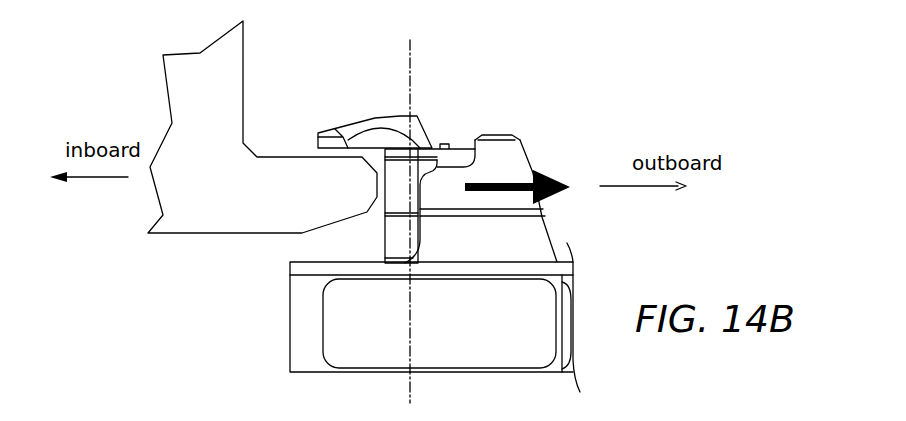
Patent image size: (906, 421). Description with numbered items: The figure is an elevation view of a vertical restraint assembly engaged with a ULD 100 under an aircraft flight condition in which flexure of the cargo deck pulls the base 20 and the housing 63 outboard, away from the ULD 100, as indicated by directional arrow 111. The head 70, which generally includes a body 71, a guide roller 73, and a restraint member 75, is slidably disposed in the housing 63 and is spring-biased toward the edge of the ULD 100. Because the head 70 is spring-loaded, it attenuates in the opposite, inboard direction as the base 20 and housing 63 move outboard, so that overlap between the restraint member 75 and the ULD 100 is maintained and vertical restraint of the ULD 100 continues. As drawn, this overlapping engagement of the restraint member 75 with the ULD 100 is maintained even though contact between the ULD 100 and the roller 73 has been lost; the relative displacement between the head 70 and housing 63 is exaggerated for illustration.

The base 20 is at (298, 302).
The housing 63 is at (513, 158).
The head 70 is at (514, 94).
The body 71 is at (490, 153).
The guide roller 73 is at (387, 200).
The restraint member 75 is at (393, 122).
The ULD 100 is at (229, 200).
The directional arrow 111 is at (553, 200).